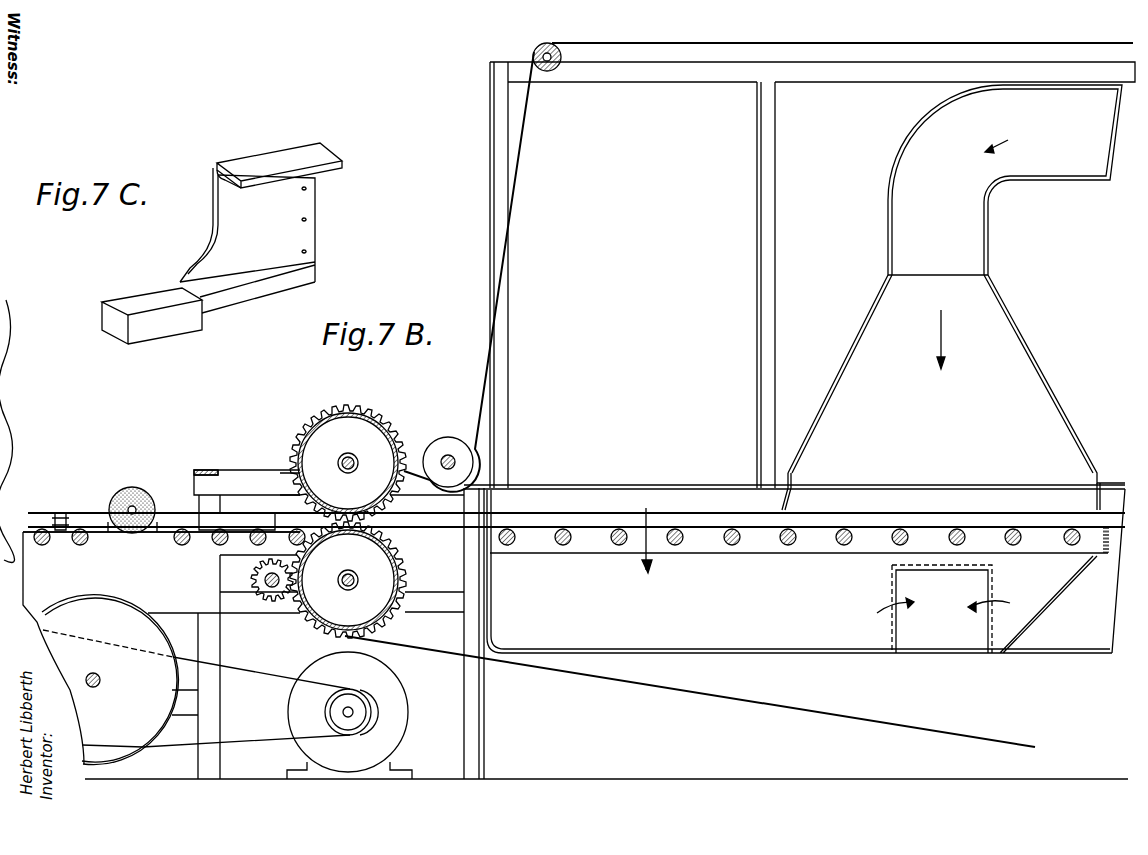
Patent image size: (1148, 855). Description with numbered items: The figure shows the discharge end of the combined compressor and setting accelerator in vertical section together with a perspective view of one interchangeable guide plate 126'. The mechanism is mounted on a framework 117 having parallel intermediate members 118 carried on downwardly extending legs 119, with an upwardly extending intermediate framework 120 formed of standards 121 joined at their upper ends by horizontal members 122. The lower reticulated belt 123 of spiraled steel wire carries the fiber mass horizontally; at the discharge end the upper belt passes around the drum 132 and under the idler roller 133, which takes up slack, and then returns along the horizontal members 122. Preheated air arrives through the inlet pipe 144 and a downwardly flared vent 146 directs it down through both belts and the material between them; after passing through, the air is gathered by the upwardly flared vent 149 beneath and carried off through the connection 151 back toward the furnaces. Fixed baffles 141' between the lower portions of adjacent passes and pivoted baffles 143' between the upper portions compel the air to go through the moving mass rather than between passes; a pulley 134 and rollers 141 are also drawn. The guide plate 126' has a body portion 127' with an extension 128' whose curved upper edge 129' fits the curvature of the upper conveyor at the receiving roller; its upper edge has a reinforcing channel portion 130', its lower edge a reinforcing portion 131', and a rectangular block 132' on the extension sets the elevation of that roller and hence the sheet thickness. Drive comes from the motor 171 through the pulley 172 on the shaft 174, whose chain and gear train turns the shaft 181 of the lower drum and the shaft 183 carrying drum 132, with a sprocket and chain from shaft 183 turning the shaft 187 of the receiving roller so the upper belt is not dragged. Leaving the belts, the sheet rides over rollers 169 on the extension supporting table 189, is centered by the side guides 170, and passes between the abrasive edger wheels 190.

In FIG. 7B, the framework 117 is at (690, 484).
In FIG. 7B, the intermediate members 118 is at (573, 497).
In FIG. 7B, the legs 119 is at (480, 722).
In FIG. 7B, the intermediate framework 120 is at (490, 180).
In FIG. 7B, the standards 121 is at (497, 107).
In FIG. 7B, the horizontal members 122 is at (852, 80).
In FIG. 7B, the reticulated belt 123 is at (745, 700).
In FIG. 7C, the interchangeable guide plate 126' is at (279, 155).
In FIG. 7C, the body portion 127' is at (286, 218).
In FIG. 7C, the extension 128' is at (152, 288).
In FIG. 7C, the curved upper edge 129' is at (191, 225).
In FIG. 7C, the channel portion 130' is at (206, 168).
In FIG. 7C, the reinforcing portion 131' is at (247, 292).
In FIG. 7C, the rectangular block 132' is at (154, 330).
In FIG. 7B, the drum 132 is at (341, 455).
In FIG. 7B, the idler roller 133 is at (447, 447).
In FIG. 7B, the pulley and chain 134 is at (542, 46).
In FIG. 7B, the conveyor rollers 141 is at (797, 545).
In FIG. 7B, the baffles 141' is at (1074, 551).
In FIG. 7B, the baffles 143' is at (941, 491).
In FIG. 7B, the inlet pipe 144 is at (1085, 167).
In FIG. 7B, the downwardly flared vent 146 is at (1010, 370).
In FIG. 7B, the upwardly flared vent 149 is at (843, 630).
In FIG. 7B, the connection 151 is at (950, 635).
In FIG. 7B, the rollers 169 is at (182, 538).
In FIG. 7B, the side guide 170 is at (235, 518).
In FIG. 7B, the motor 171 is at (400, 696).
In FIG. 7B, the pulley 172 is at (143, 627).
In FIG. 7B, the shaft 174 is at (101, 679).
In FIG. 7B, the shaft 181 is at (352, 588).
In FIG. 7B, the shaft 183 is at (350, 455).
In FIG. 7B, the shaft 187 is at (402, 565).
In FIG. 7B, the extension supporting table 189 is at (95, 530).
In FIG. 7B, the edger wheel 190 is at (133, 492).